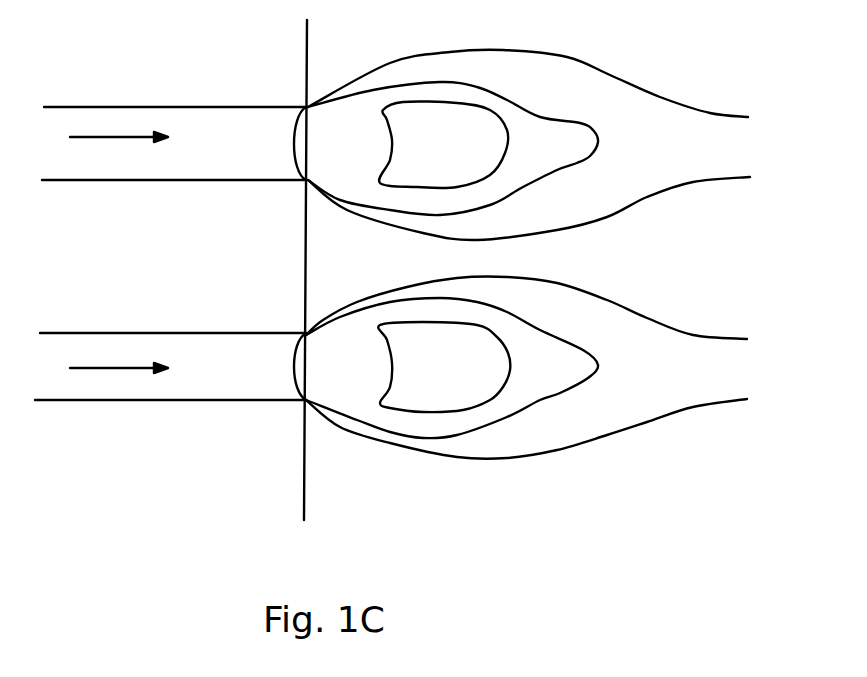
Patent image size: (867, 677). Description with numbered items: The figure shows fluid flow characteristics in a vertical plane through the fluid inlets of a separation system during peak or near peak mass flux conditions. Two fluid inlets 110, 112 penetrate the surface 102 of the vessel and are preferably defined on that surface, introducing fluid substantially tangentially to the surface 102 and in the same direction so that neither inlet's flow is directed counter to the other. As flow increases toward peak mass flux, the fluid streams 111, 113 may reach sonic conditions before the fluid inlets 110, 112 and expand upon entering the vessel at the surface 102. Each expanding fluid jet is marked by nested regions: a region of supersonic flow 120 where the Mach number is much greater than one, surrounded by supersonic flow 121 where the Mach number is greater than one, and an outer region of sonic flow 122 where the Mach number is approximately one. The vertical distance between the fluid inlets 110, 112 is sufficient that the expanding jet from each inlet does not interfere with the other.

The surface 102 is at (303, 230).
The fluid inlet 110 is at (211, 105).
The fluid stream 111 is at (101, 137).
The fluid inlet 112 is at (202, 402).
The fluid stream 113 is at (98, 368).
The region of supersonic flow 120 is at (457, 167).
The supersonic flow 121 is at (523, 173).
The sonic flow 122 is at (648, 185).